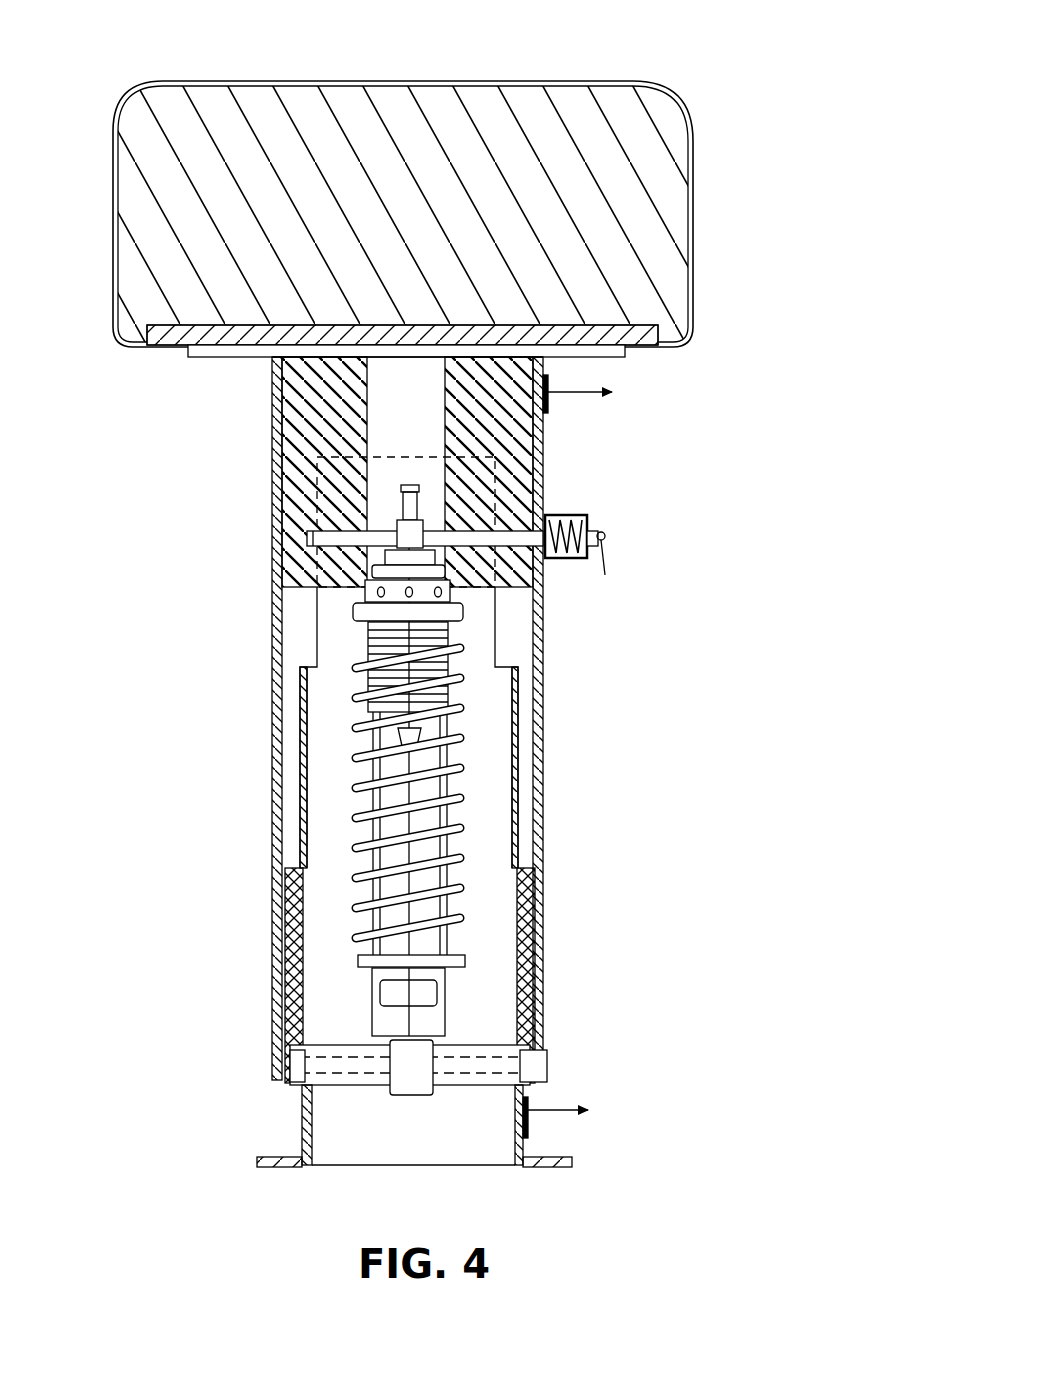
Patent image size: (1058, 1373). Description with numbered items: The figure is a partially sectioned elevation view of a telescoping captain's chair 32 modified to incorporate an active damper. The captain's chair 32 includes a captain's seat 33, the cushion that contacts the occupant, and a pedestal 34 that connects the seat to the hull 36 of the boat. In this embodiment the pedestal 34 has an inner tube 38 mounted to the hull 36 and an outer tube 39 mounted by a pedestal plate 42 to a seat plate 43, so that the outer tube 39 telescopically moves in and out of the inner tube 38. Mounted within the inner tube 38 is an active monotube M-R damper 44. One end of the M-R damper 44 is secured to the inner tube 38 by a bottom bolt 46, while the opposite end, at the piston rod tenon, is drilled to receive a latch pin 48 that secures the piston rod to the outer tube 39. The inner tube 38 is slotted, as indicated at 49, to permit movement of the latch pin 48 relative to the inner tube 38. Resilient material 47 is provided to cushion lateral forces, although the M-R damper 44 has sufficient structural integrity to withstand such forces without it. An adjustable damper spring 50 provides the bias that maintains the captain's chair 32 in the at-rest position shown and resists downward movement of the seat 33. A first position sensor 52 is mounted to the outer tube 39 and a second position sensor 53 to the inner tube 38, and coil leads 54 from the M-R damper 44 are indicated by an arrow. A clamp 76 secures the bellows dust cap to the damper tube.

The captain's chair 32 is at (690, 73).
The captain's seat 33 is at (512, 80).
The pedestal 34 is at (600, 850).
The hull 36 is at (490, 1165).
The inner tube 38 is at (303, 1130).
The outer tube 39 is at (543, 668).
The pedestal plate 42 is at (223, 358).
The seat plate 43 is at (148, 352).
The M-R damper 44 is at (440, 527).
The bottom bolt 46 is at (530, 1060).
The resilient material 47 is at (303, 592).
The latch pin 48 is at (598, 533).
The slot 49 is at (272, 505).
The adjustable damper spring 50 is at (455, 632).
The first position sensor 52 is at (548, 380).
The second position sensor 53 is at (528, 1115).
The coil leads 54 is at (405, 485).
The clamp 76 is at (450, 728).